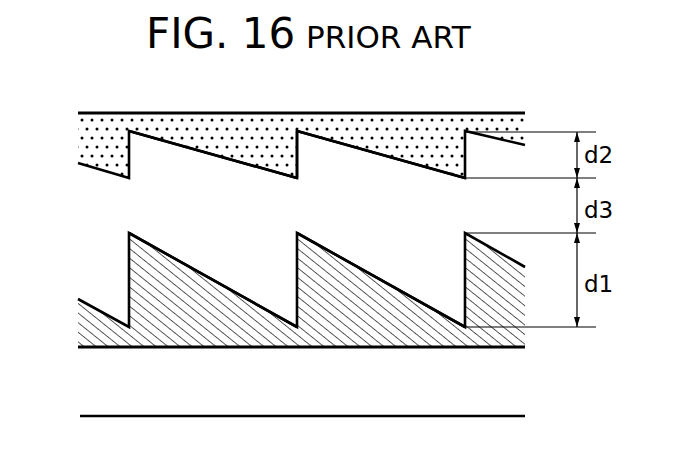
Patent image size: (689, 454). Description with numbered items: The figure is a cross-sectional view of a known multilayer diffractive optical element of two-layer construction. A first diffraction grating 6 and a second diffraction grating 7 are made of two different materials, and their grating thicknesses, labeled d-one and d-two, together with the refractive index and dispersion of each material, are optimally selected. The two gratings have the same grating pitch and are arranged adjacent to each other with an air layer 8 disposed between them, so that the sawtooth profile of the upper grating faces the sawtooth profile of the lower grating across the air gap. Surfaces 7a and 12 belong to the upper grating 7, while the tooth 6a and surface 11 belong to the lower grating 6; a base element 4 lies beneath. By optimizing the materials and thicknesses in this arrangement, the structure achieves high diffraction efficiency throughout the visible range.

The second diffraction grating 7 is at (78, 138).
The inclined surface of upper member 7a is at (252, 144).
The air layer 8 is at (328, 176).
The inclined surface 12 is at (393, 157).
The first diffraction grating 6 is at (78, 330).
The sawtooth projection of lower member 6a is at (190, 317).
The inclined surface of lower member 11 is at (358, 270).
The base plate 4 is at (513, 393).